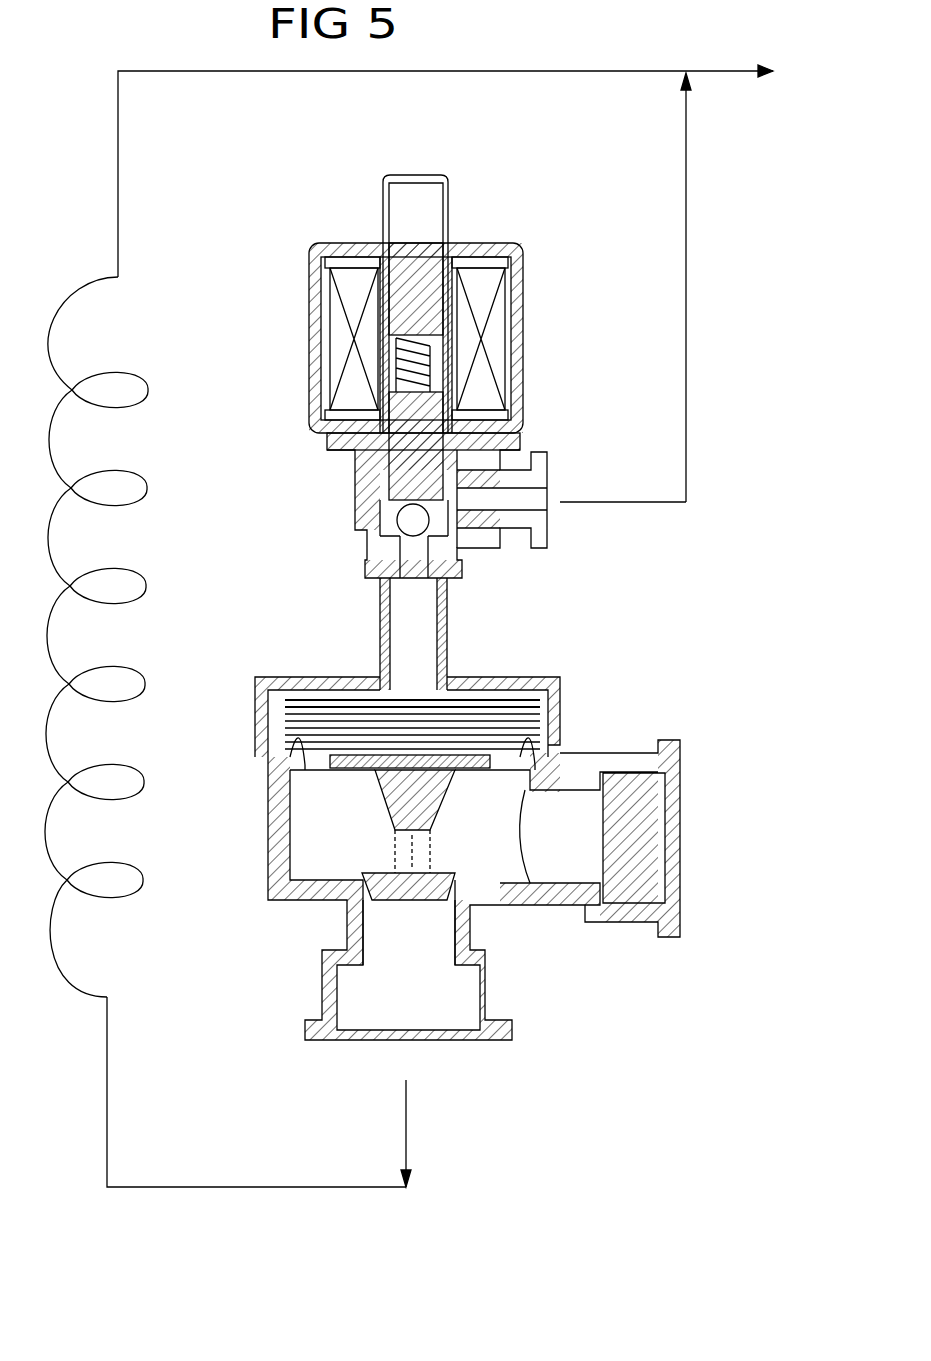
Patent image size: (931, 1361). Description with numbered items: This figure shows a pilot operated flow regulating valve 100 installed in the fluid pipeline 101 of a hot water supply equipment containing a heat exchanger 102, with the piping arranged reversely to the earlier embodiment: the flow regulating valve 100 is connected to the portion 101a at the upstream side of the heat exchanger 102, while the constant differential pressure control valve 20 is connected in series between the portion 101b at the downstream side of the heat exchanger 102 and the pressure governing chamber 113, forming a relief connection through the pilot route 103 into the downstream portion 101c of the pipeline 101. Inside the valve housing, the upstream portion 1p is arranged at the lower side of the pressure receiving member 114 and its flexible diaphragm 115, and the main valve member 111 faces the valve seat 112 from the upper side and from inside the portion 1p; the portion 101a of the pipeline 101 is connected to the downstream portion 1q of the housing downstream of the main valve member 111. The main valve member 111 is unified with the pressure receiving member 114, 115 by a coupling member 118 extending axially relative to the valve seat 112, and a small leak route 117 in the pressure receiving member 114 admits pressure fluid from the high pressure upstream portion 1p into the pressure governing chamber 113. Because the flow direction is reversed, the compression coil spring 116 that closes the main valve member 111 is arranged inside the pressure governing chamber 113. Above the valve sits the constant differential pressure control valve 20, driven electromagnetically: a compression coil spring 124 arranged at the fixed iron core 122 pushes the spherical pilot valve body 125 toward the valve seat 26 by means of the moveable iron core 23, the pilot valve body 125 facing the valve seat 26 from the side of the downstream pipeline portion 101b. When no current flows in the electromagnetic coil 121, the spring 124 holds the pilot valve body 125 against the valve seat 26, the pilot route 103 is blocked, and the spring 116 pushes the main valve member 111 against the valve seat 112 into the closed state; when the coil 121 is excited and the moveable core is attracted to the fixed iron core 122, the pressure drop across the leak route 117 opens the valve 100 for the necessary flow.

The constant differential pressure control valve 20 is at (405, 341).
The electromagnetic coil 121 is at (345, 305).
The fixed iron core 122 is at (415, 250).
The compression coil spring 124 is at (430, 350).
The moveable iron core 23 is at (445, 402).
The pilot valve body 125 is at (407, 515).
The valve seat 26 is at (392, 527).
The pilot route 103 is at (607, 502).
The heat exchanger 102 is at (152, 593).
The portion of fluid pipeline 101a is at (268, 1190).
The portion of fluid pipeline 101b is at (530, 73).
The downstream portion of pipeline 101c is at (740, 75).
The fluid pipeline 101 is at (712, 840).
The pilot operated flow regulating valve 100 is at (490, 864).
The flexible diaphragm 115 is at (293, 700).
The pressure governing chamber 113 is at (485, 722).
The compression coil spring 116 is at (542, 722).
The pressure receiving member 114 is at (358, 767).
The leak route 117 is at (503, 770).
The coupling member 118 is at (400, 845).
The valve seat 112 is at (420, 890).
The main valve member 111 is at (462, 882).
The upstream portion 1p is at (630, 888).
The downstream portion 1q is at (450, 1015).